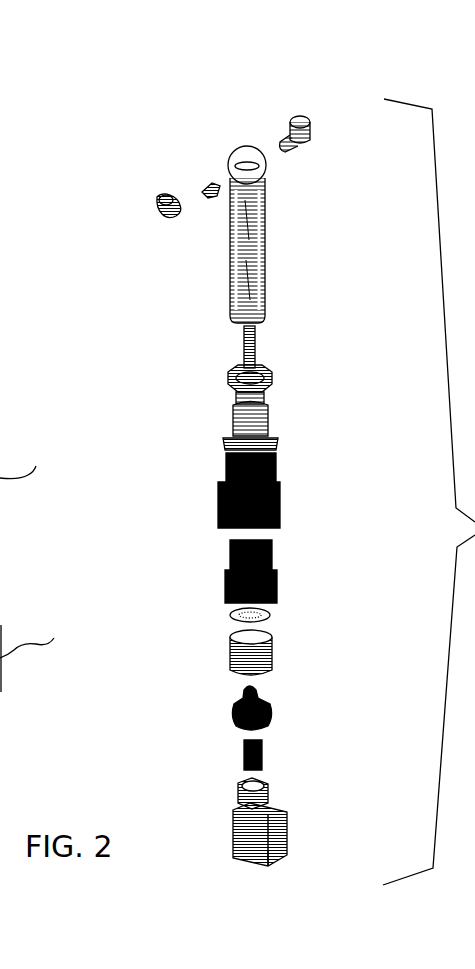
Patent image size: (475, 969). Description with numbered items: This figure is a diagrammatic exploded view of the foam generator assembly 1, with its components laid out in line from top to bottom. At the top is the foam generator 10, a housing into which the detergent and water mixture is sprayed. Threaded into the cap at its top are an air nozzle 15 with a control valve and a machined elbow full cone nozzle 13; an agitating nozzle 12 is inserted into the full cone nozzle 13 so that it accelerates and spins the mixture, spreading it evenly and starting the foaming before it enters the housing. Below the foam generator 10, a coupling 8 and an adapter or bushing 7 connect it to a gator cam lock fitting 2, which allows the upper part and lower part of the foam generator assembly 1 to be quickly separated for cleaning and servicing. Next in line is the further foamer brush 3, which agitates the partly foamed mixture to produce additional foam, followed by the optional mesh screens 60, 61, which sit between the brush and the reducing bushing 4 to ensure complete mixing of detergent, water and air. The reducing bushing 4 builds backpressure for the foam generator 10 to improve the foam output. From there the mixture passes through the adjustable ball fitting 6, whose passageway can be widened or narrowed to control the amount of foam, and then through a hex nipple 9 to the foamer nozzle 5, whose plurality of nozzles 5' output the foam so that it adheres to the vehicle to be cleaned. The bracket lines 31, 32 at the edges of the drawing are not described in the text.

The foam generator assembly 1 is at (208, 304).
The gator cam lock fitting 2 is at (282, 497).
The further foamer brush 3 is at (277, 577).
The reducing bushing 4 is at (272, 650).
The foamer nozzle 5 is at (290, 822).
The nozzles 5' is at (262, 885).
The adjustable ball fitting 6 is at (272, 712).
The adapter or bushing 7 is at (275, 428).
The coupling 8 is at (268, 374).
The hex nipple 9 is at (264, 754).
The foam generator 10 is at (265, 241).
The agitating nozzle 12 is at (200, 186).
The elbow full cone nozzle 13 is at (157, 196).
The air nozzle 15 is at (300, 117).
The panel 31 is at (32, 652).
The panel 32 is at (23, 457).
The mesh screen 60 is at (309, 617).
The mesh screen 61 is at (270, 615).